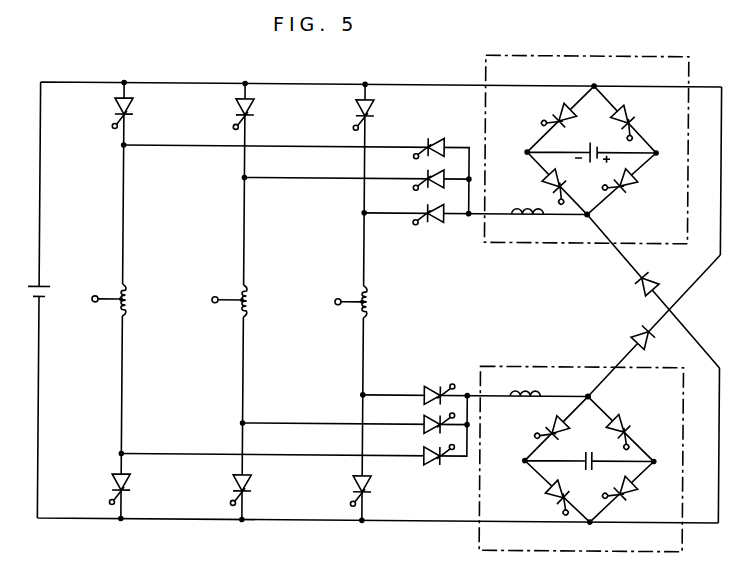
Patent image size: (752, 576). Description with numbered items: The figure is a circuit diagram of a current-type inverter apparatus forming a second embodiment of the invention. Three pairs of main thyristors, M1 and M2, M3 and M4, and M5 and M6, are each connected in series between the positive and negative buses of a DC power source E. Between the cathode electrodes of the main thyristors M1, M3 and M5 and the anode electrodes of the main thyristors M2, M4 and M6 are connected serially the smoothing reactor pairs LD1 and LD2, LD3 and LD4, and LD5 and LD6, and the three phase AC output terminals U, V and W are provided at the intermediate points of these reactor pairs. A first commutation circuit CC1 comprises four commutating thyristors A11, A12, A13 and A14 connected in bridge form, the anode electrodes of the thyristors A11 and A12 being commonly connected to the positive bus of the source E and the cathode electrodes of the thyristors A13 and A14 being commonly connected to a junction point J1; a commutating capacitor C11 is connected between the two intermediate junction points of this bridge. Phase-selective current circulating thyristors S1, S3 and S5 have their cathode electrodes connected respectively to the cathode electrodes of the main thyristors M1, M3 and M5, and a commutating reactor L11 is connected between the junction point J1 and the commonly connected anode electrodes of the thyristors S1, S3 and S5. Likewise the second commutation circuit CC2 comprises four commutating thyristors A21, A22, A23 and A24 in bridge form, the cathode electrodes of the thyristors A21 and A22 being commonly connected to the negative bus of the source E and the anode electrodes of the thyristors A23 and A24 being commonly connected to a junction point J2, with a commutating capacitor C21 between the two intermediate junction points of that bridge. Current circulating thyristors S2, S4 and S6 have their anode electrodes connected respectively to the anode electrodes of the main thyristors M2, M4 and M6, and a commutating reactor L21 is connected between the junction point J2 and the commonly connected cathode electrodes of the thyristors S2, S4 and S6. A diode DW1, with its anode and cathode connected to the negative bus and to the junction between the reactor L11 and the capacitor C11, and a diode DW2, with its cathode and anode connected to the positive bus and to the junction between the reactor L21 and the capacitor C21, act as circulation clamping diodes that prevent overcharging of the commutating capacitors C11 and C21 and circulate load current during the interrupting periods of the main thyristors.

The main thyristor M1 is at (132, 104).
The main thyristor M2 is at (111, 484).
The main thyristor M3 is at (252, 106).
The main thyristor M4 is at (236, 483).
The main thyristor M5 is at (372, 106).
The main thyristor M6 is at (354, 484).
The current circulating thyristor S1 is at (418, 158).
The current circulating thyristor S2 is at (436, 463).
The current circulating thyristor S3 is at (423, 188).
The current circulating thyristor S4 is at (425, 431).
The current circulating thyristor S5 is at (434, 222).
The current circulating thyristor S6 is at (425, 400).
The smoothing reactor LD1 is at (128, 287).
The smoothing reactor LD2 is at (129, 318).
The smoothing reactor LD3 is at (252, 286).
The smoothing reactor LD4 is at (250, 317).
The smoothing reactor LD5 is at (370, 285).
The smoothing reactor LD6 is at (370, 317).
The three phase AC output terminal U is at (99, 301).
The three phase AC output terminal V is at (218, 301).
The three phase AC output terminal W is at (336, 304).
The DC power source E is at (49, 293).
The commutating thyristor A11 is at (555, 113).
The commutating thyristor A12 is at (632, 124).
The commutating thyristor A13 is at (617, 193).
The commutating thyristor A14 is at (542, 187).
The commutating thyristor A21 is at (548, 495).
The commutating thyristor A22 is at (623, 497).
The commutating thyristor A23 is at (622, 423).
The commutating thyristor A24 is at (552, 425).
The commutating capacitor C11 is at (590, 143).
The commutating capacitor C21 is at (588, 457).
The commutating reactor L11 is at (520, 221).
The commutating reactor L21 is at (529, 390).
The junction point J1 is at (589, 216).
The junction point J2 is at (591, 397).
The diode DW1 is at (636, 276).
The diode DW2 is at (638, 324).
The commutation circuit CC1 is at (661, 55).
The second commutation circuit CC2 is at (577, 1).